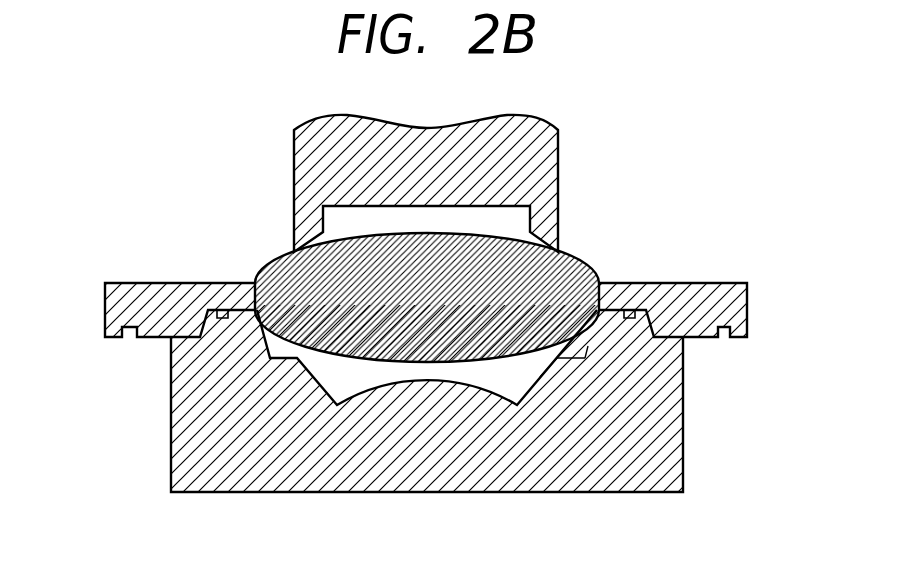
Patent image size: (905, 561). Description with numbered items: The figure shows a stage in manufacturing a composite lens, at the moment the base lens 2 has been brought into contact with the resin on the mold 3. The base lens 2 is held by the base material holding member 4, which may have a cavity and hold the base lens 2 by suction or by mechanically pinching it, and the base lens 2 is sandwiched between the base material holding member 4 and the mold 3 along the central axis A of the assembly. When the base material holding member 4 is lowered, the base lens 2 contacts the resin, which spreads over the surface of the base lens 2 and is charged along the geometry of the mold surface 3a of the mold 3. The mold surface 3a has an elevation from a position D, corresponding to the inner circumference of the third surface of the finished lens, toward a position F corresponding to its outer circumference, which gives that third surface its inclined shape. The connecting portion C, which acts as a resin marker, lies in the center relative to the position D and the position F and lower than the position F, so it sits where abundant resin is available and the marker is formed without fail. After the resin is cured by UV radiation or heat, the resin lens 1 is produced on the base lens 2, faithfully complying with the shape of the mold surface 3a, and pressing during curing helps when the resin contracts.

The resin lens 1 is at (585, 347).
The base lens 2 is at (735, 303).
The mold 3 is at (682, 440).
The mold surface 3a is at (262, 335).
The base material holding member 4 is at (540, 176).
The optical axis A is at (427, 85).
The position F is at (231, 329).
The connecting portion C is at (295, 373).
The position D is at (265, 372).